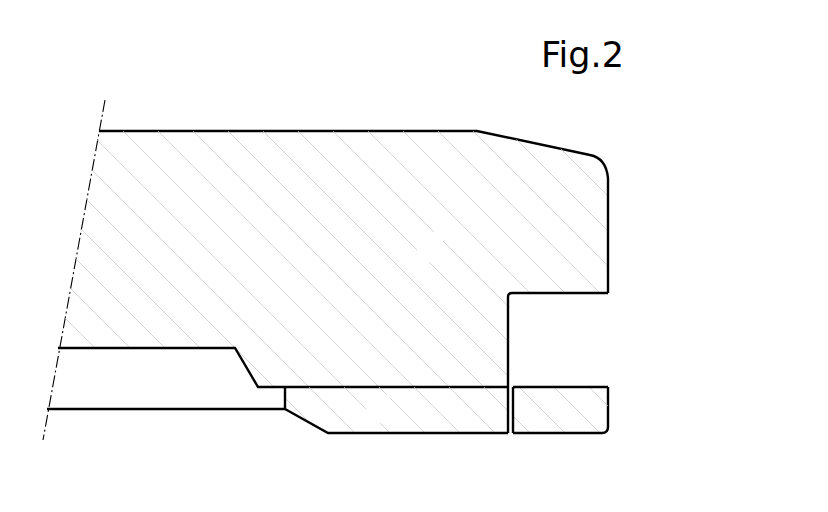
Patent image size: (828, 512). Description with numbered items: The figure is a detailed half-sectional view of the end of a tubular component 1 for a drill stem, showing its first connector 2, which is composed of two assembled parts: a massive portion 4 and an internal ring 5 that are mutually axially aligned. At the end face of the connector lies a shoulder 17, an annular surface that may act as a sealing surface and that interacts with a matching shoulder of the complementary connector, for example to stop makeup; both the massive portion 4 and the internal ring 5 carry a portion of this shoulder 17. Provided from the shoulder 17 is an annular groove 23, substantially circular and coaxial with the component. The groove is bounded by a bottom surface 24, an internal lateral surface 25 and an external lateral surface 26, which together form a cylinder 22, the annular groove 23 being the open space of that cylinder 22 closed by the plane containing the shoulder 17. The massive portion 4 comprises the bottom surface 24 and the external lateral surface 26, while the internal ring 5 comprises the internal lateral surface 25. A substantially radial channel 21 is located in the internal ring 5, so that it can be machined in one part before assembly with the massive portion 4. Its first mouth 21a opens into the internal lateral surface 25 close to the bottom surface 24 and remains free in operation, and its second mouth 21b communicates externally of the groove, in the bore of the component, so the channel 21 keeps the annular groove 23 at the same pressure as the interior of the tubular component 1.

The tubular component 1 is at (370, 100).
The first connector 2 is at (290, 114).
The massive portion 4 is at (438, 257).
The internal ring 5 is at (385, 419).
The shoulder 17 is at (608, 262).
The channel 21 is at (507, 410).
The first mouth 21a is at (512, 386).
The second mouth 21b is at (512, 433).
The cylinder 22 is at (597, 313).
The annular groove 23 is at (547, 335).
The bottom surface 24 is at (510, 353).
The internal lateral surface 25 is at (593, 387).
The external lateral surface 26 is at (563, 293).